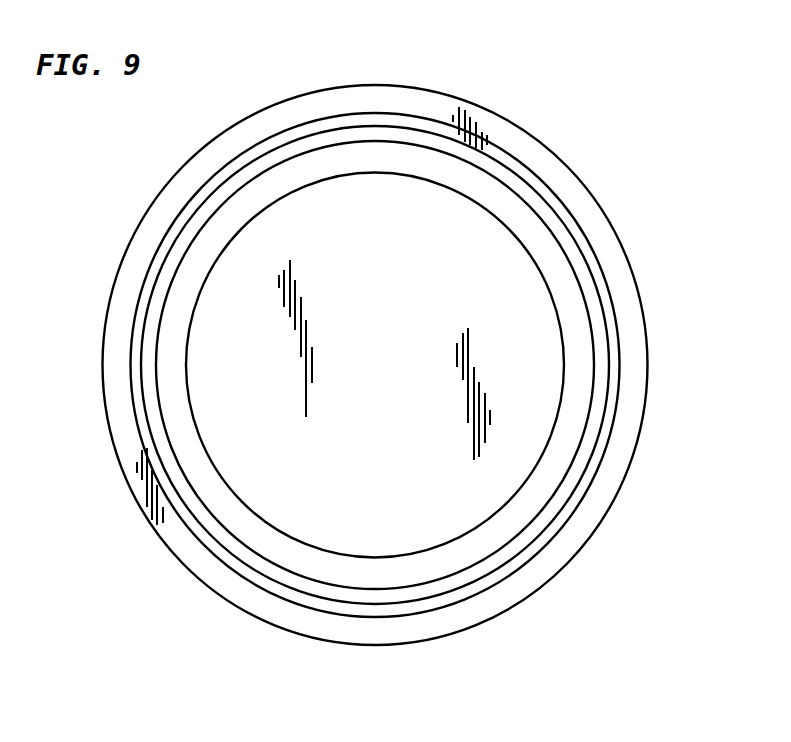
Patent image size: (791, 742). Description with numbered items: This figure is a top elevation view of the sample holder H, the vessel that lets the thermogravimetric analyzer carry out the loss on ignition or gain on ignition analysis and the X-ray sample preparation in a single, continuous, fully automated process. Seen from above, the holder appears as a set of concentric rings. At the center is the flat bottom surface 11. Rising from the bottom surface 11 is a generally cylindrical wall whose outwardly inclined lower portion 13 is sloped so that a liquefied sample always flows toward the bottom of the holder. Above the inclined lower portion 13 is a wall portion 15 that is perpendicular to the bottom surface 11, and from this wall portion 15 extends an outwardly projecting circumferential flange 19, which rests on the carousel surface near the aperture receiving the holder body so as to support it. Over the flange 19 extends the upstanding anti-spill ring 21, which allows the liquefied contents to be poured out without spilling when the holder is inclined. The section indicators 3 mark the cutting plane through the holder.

The flat bottom surface 11 is at (443, 288).
The outwardly inclined lower portion 13 is at (565, 287).
The perpendicular wall portion 15 is at (608, 407).
The outwardly extending circumferential flange 19 is at (573, 193).
The upstanding anti-spill ring 21 is at (600, 348).
The section line indicator 3 is at (419, 58).
The sample holder H is at (537, 108).